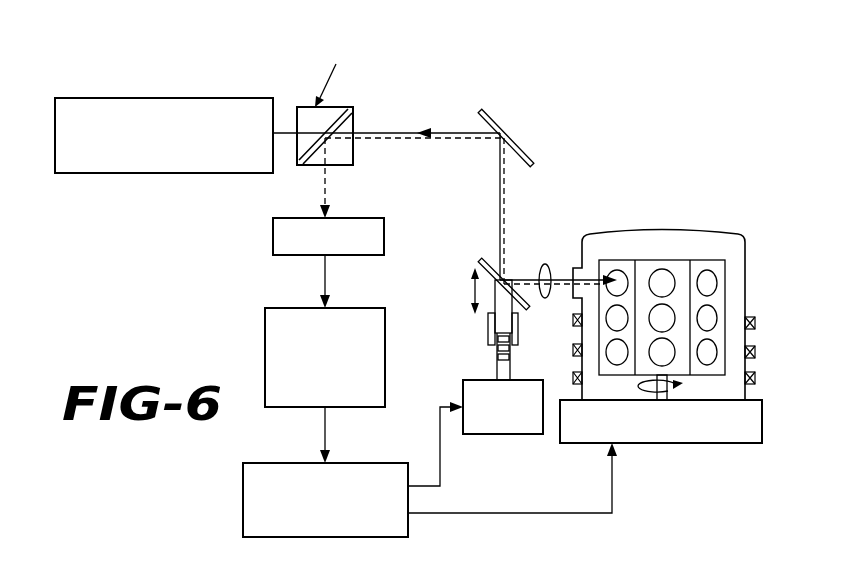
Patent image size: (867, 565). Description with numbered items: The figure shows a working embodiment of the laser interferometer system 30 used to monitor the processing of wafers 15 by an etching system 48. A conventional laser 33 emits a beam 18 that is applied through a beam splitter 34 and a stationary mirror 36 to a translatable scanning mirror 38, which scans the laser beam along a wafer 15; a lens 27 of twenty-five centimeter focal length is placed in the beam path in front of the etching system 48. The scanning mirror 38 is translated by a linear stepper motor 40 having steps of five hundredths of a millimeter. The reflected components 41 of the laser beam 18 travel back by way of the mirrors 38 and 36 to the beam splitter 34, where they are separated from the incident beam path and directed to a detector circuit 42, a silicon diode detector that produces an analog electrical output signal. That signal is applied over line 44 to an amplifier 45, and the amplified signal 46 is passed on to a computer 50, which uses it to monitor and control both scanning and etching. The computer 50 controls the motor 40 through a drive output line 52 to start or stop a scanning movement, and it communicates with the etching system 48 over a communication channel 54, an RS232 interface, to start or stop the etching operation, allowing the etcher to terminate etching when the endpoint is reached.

The wafers 15 is at (623, 256).
The beam 18 is at (447, 134).
The lens 27 is at (549, 264).
The laser interferometer system 30 is at (661, 288).
The laser 33 is at (99, 100).
The beam splitter 34 is at (353, 126).
The stationary mirror 36 is at (493, 120).
The translatable scanning mirror 38 is at (481, 256).
The linear stepper motor 40 is at (488, 435).
The reflected components 41 is at (323, 184).
The detector circuit 42 is at (360, 222).
The line 44 is at (323, 280).
The amplifier 45 is at (268, 327).
The amplifier output signal 46 is at (330, 442).
The etching system 48 is at (703, 225).
The computer 50 is at (257, 465).
The drive output line 52 is at (438, 408).
The communication channel 54 is at (610, 485).